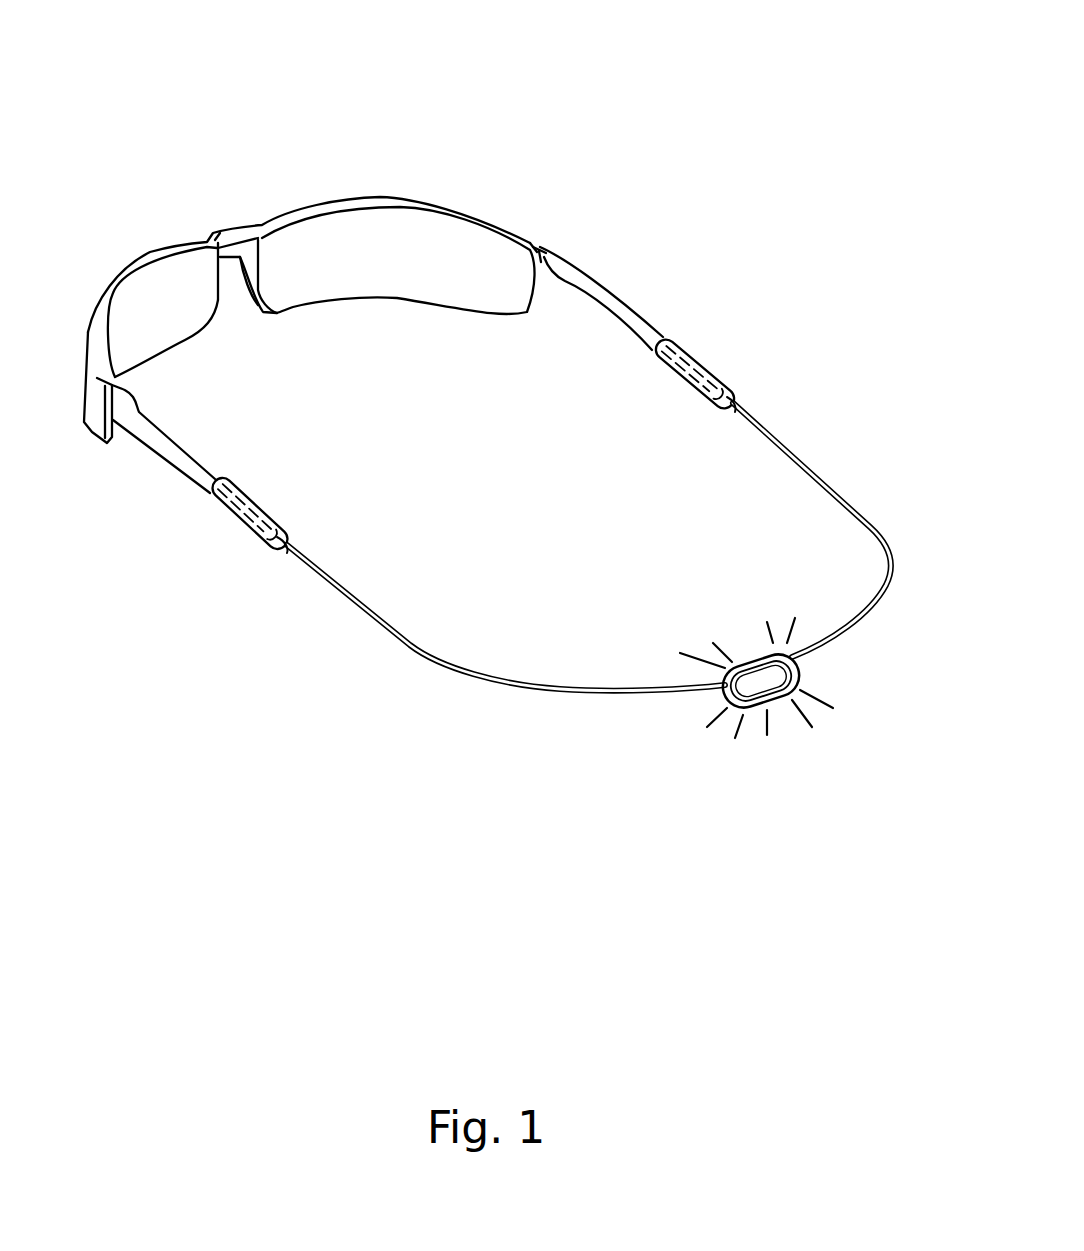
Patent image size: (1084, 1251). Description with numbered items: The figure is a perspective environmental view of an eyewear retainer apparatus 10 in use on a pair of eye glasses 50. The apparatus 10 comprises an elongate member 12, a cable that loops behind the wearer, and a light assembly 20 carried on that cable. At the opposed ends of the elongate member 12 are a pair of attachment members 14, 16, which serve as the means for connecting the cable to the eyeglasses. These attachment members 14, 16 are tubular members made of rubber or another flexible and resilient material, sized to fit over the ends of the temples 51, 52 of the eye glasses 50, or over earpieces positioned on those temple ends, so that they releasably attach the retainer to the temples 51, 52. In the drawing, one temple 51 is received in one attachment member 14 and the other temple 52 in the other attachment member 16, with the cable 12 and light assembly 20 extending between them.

The eyewear retainer apparatus 10 is at (846, 142).
The elongate member 12 is at (783, 442).
The attachment member 14 is at (278, 545).
The attachment member 16 is at (720, 387).
The light assembly 20 is at (795, 725).
The eye glasses 50 is at (142, 248).
The temple 51 is at (256, 529).
The temple 52 is at (713, 387).